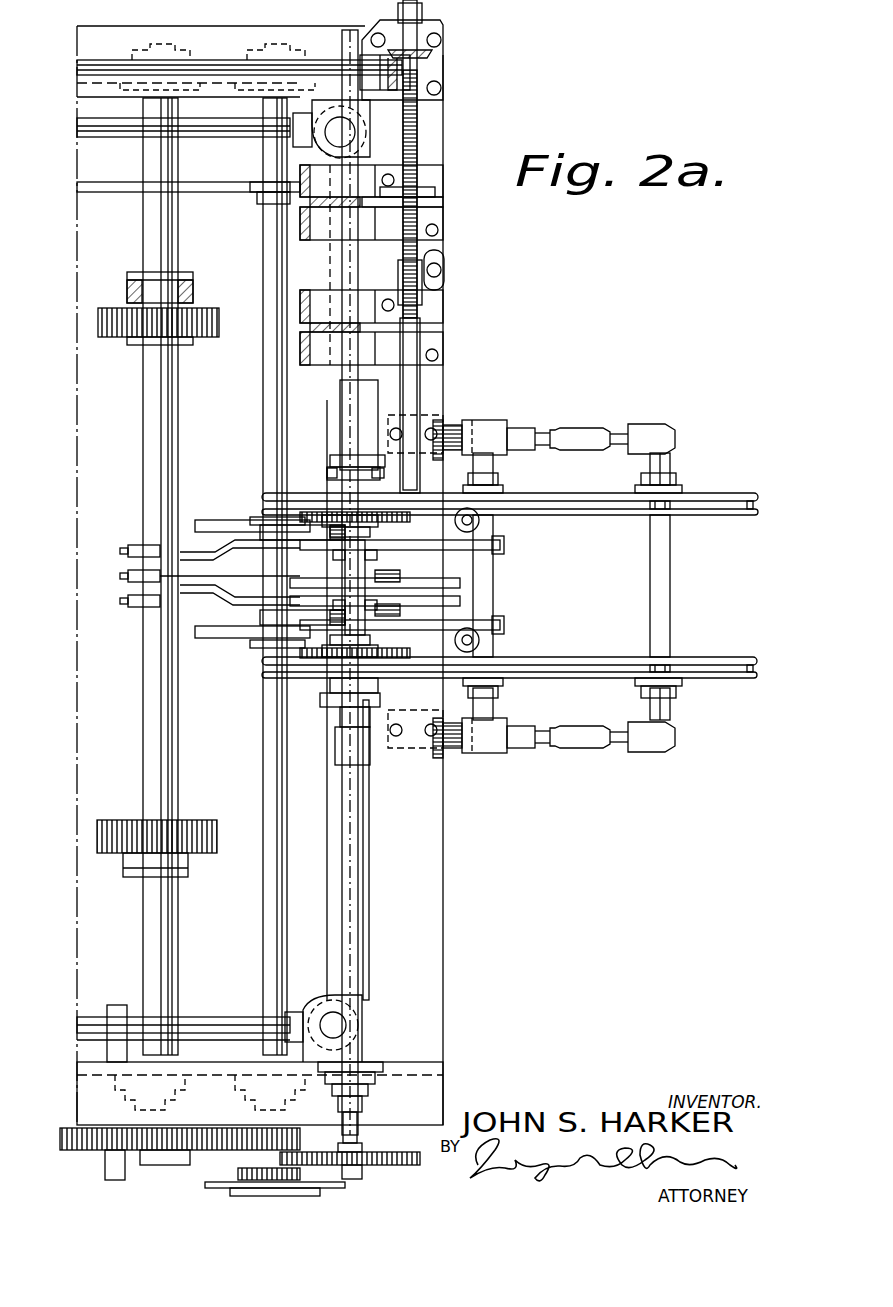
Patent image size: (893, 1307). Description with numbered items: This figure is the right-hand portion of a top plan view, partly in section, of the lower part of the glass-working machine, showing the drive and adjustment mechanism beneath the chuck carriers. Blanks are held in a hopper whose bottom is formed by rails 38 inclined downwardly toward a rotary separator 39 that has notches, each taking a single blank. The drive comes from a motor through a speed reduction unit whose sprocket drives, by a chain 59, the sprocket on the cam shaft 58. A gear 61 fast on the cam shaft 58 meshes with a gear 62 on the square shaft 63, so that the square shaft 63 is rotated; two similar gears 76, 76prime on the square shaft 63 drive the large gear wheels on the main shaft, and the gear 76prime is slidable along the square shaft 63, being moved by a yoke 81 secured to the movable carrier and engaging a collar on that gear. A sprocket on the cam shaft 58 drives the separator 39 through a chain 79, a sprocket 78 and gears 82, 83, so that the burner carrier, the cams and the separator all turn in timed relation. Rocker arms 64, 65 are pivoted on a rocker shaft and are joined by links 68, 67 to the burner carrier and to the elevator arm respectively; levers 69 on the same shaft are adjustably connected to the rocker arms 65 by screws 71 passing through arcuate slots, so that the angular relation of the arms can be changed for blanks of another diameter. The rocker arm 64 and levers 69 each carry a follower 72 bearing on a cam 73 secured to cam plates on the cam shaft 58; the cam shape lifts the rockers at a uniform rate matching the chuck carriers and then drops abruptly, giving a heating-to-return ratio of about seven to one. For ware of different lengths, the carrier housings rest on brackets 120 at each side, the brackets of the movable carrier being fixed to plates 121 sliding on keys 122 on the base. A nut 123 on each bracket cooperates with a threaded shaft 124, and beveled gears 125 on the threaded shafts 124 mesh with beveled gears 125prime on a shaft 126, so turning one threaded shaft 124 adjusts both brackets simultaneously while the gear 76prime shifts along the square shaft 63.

The rails 38 is at (612, 520).
The rotary separator 39 is at (398, 640).
The cam shaft 58 is at (262, 992).
The chain 59 is at (205, 1186).
The gear 61 is at (255, 1133).
The gear 62 is at (200, 1133).
The square shaft 63 is at (170, 952).
The rocker arm 64 is at (265, 528).
The rocker arm 65 is at (205, 548).
The link 67 is at (128, 576).
The link 68 is at (128, 551).
The lever 69 is at (505, 548).
The screw 71 is at (455, 522).
The follower 72 is at (265, 520).
The cam 73 is at (215, 520).
The gear 76 is at (215, 838).
The gear 76prime is at (219, 325).
The sprocket 78 is at (370, 1166).
The chain 79 is at (372, 1150).
The yoke 81 is at (130, 274).
The gear 82 is at (340, 1179).
The gear 83 is at (236, 1168).
The bracket 120 is at (438, 212).
The plate 121 is at (444, 275).
The key 122 is at (410, 385).
The nut 123 is at (432, 197).
The threaded shaft 124 is at (422, 305).
The beveled gear 125 is at (443, 50).
The beveled gear 125prime is at (412, 72).
The shaft 126 is at (78, 62).